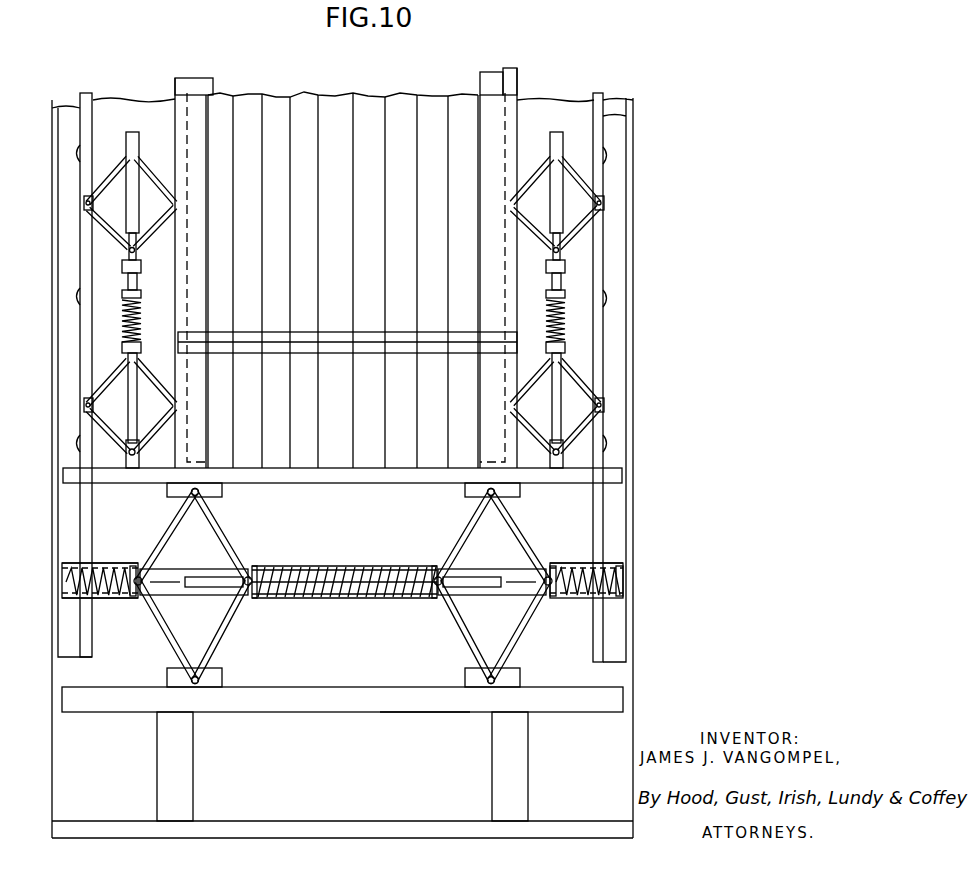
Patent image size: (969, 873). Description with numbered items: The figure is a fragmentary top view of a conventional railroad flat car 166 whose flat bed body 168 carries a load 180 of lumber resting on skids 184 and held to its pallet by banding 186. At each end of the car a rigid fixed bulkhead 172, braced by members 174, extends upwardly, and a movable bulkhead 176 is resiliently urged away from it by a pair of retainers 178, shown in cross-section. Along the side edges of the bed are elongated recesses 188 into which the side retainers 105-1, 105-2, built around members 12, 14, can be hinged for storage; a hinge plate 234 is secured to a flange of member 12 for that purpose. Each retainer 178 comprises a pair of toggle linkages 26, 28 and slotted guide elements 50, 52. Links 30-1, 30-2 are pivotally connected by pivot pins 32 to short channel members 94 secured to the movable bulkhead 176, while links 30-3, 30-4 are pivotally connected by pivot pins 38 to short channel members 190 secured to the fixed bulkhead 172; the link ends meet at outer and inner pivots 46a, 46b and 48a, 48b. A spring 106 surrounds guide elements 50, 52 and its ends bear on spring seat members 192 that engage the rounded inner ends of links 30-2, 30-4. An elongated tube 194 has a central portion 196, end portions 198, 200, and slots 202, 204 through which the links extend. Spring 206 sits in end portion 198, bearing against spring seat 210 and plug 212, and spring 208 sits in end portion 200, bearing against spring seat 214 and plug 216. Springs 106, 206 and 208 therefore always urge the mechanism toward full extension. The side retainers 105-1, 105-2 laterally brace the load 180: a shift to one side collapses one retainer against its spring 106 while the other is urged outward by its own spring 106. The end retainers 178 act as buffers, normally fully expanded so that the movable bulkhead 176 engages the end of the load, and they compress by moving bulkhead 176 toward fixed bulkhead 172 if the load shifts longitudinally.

The member 12 is at (88, 95).
The member 14 is at (178, 82).
The toggle linkage 26 is at (205, 531).
The toggle linkage 28 is at (497, 538).
The link 30-1 is at (170, 520).
The link 30-2 is at (238, 530).
The link 30-3 is at (158, 640).
The link 30-4 is at (222, 640).
The pivot pin 32 is at (197, 492).
The pivot pin 38 is at (200, 690).
The outer pivot 46a is at (131, 597).
The outer pivot 46b is at (549, 596).
The inner pivot 48a is at (232, 592).
The inner pivot 48b is at (433, 592).
The slotted guide element 50 is at (190, 578).
The slotted guide element 52 is at (510, 586).
The channel member 94 is at (222, 490).
The retainer 105-1 is at (121, 303).
The retainer 105-2 is at (566, 330).
The spring 106 is at (333, 567).
The railroad flat car 166 is at (652, 352).
The flat bed body 168 is at (622, 733).
The bulkhead 172 is at (425, 708).
The member 174 is at (188, 768).
The movable bulkhead 176 is at (622, 476).
The retainer 178 is at (362, 652).
The load 180 is at (334, 105).
The skid 184 is at (205, 80).
The banding 186 is at (358, 330).
The elongated recess 188 is at (66, 108).
The channel member 190 is at (177, 680).
The spring seat member 192 is at (262, 568).
The elongated tube 194 is at (303, 604).
The central portion 196 is at (313, 598).
The end portion 198 is at (72, 597).
The end portion 200 is at (612, 568).
The slot 202 is at (190, 598).
The slot 204 is at (505, 600).
The spring 206 is at (98, 562).
The spring 208 is at (580, 568).
The spring seat 210 is at (137, 565).
The plug 212 is at (62, 583).
The spring seat 214 is at (549, 570).
The plug 216 is at (623, 583).
The hinge plate 234 is at (76, 153).